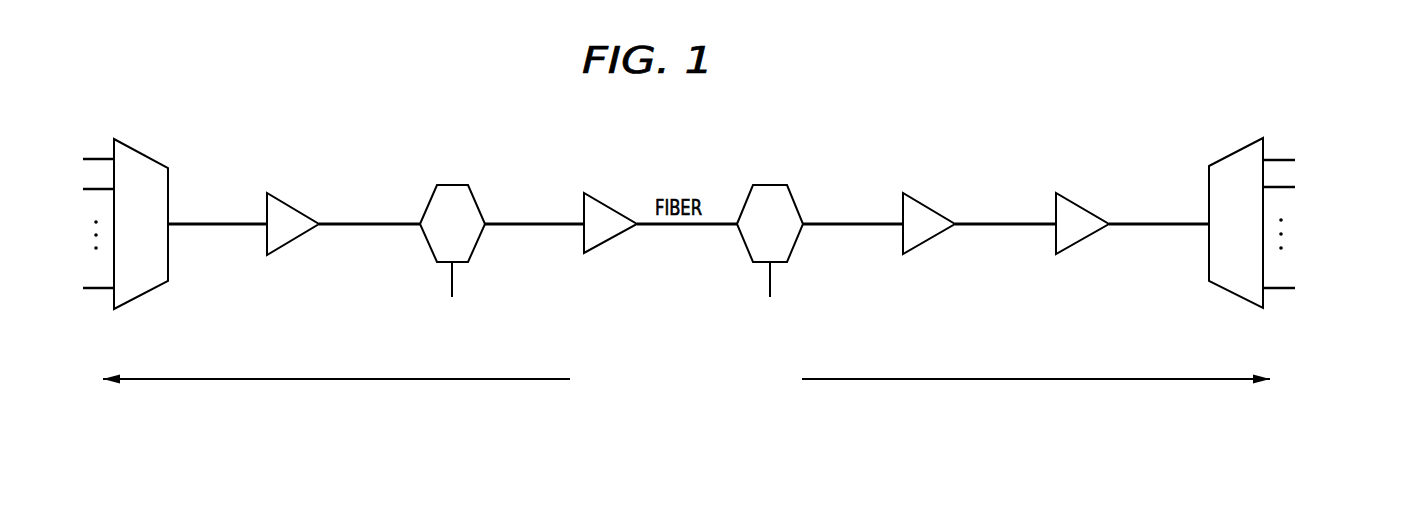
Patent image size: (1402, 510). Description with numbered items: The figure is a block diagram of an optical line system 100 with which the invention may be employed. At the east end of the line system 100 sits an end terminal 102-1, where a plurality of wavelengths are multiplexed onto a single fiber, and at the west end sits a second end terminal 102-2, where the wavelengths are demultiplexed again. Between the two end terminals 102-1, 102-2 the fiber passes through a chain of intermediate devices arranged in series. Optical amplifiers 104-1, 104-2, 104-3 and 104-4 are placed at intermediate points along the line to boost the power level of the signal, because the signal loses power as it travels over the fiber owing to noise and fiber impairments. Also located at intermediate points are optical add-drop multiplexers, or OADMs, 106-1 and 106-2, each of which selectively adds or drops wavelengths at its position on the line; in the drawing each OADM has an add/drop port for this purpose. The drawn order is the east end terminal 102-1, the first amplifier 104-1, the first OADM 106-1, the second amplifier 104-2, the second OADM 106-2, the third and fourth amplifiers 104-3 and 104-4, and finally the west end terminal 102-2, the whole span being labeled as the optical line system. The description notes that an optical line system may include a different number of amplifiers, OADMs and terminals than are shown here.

The optical line system 100 is at (1314, 90).
The end terminal 102-1 is at (143, 295).
The end terminal 102-2 is at (1235, 294).
The optical amplifier 104-1 is at (288, 244).
The optical amplifier 104-2 is at (605, 243).
The optical amplifier 104-3 is at (923, 243).
The optical amplifier 104-4 is at (1076, 243).
The optical add-drop multiplexer 106-1 is at (477, 243).
The optical add-drop multiplexer 106-2 is at (795, 243).